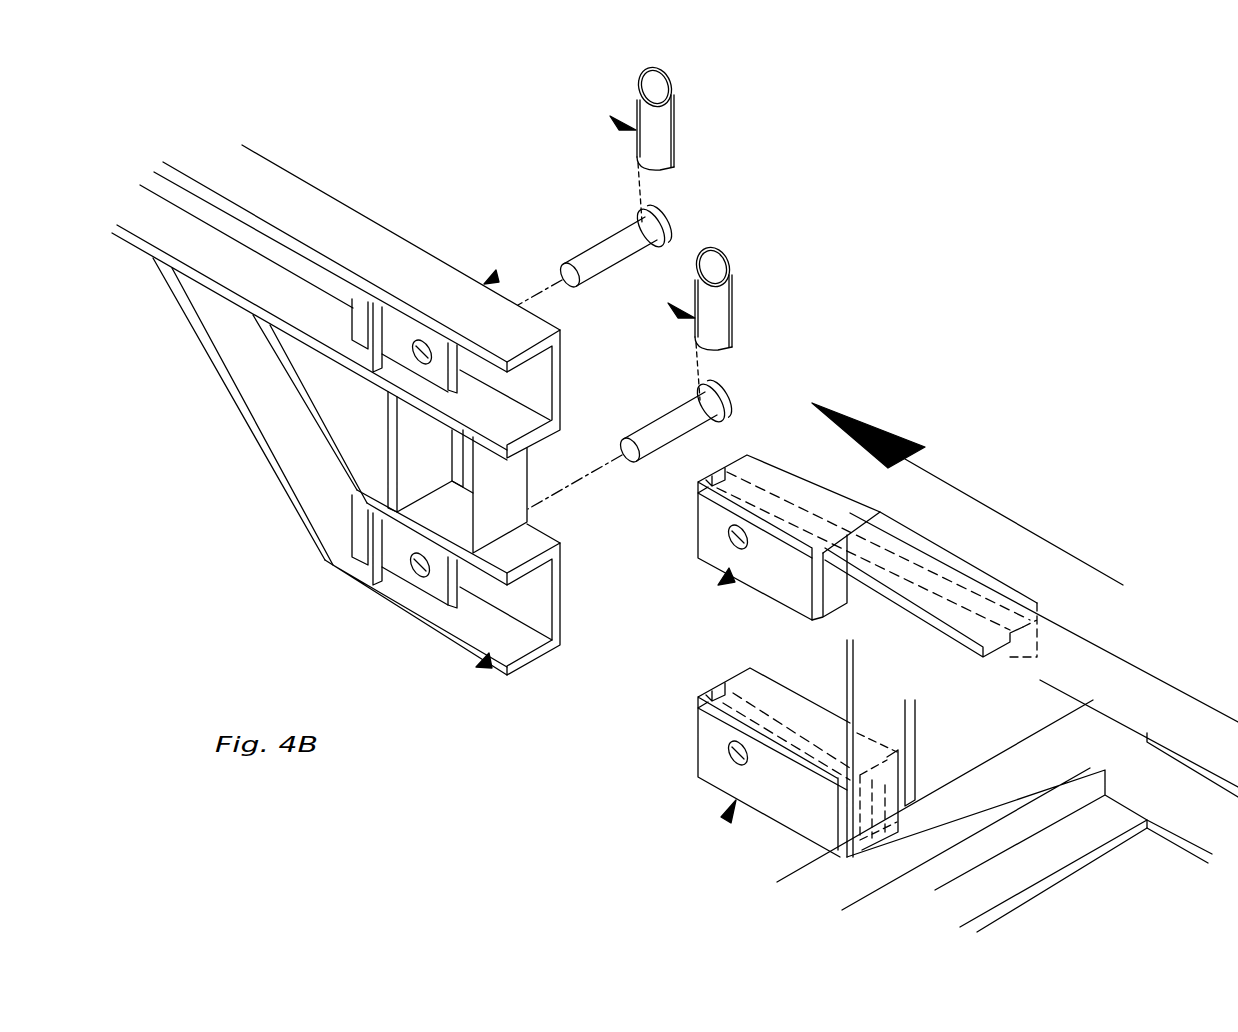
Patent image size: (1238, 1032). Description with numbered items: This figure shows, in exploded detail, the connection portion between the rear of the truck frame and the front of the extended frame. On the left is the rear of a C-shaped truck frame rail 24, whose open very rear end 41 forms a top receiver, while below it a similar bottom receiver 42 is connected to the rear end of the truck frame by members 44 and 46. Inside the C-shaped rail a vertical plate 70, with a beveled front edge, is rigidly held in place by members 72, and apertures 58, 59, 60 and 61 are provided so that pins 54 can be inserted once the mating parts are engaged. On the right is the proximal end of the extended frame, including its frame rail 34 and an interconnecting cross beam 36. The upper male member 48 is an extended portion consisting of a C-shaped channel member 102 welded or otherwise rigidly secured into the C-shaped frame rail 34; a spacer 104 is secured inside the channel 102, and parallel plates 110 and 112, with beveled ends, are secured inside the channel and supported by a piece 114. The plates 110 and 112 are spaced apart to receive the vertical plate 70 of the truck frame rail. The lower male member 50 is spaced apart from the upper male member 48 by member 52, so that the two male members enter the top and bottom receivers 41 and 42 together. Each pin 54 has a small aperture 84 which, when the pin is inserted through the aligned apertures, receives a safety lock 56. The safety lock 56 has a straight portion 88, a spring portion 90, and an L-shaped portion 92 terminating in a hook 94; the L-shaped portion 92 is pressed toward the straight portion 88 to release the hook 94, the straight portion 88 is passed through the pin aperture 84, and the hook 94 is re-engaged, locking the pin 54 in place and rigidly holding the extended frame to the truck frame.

The frame rail 24 is at (310, 222).
The frame rail 34 is at (1098, 658).
The cross beam 36 is at (1067, 868).
The rear end of truck frame rail 41 is at (492, 276).
The bottom receiver 42 is at (480, 668).
The connecting member 44 is at (247, 414).
The connecting member 46 is at (508, 493).
The male member 48 is at (722, 575).
The male member 50 is at (728, 810).
The spacing member 52 is at (850, 680).
The pin 54 is at (583, 252).
The safety lock 56 is at (676, 230).
The aperture 58 is at (419, 343).
The aperture 59 is at (418, 577).
The aperture 60 is at (727, 530).
The aperture 61 is at (727, 743).
The vertical plate 70 is at (395, 327).
The holding member 72 is at (358, 298).
The pin aperture 84 is at (642, 222).
The straight portion 88 is at (637, 100).
The spring portion 90 is at (664, 74).
The L-shaped portion 92 is at (674, 130).
The hook 94 is at (636, 158).
The C-shaped channel member 102 is at (853, 513).
The spacer 104 is at (940, 592).
The parallel plate 110 is at (757, 500).
The parallel plate 112 is at (757, 567).
The support piece 114 is at (813, 590).